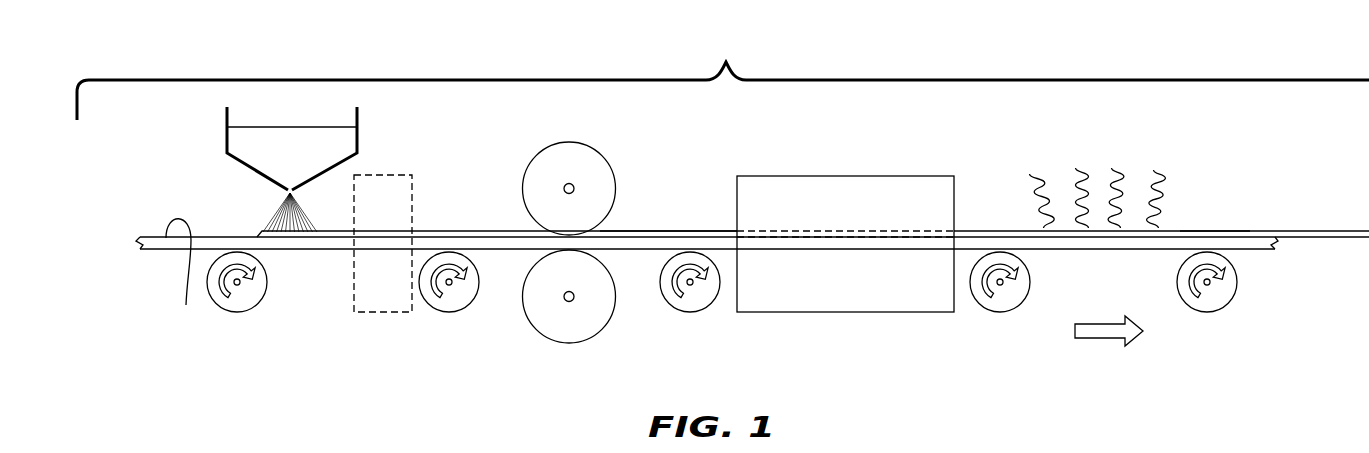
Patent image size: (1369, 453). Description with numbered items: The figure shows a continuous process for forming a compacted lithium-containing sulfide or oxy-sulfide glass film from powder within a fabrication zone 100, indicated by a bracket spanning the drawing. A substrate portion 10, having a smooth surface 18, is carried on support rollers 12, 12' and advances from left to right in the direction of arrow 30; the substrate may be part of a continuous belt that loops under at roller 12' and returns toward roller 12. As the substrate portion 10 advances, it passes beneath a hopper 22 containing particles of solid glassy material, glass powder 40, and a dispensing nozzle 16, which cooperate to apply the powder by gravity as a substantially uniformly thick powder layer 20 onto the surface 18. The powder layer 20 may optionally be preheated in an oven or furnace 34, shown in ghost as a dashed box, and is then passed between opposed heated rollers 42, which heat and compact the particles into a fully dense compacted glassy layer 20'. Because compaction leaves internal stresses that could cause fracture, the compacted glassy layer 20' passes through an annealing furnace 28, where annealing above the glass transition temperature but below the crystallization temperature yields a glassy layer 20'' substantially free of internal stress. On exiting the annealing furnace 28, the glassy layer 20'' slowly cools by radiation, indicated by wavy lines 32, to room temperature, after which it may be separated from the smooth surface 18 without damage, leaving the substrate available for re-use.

The fabrication zone 100 is at (727, 62).
The substrate portion 10 is at (153, 237).
The rollers 12 is at (618, 322).
The roller 12' is at (1240, 308).
The dispensing nozzle 16 is at (288, 192).
The smooth surface 18 is at (181, 280).
The powder layer 20 is at (813, 189).
The compacted glassy layer 20' is at (668, 196).
The glassy layer 20'' is at (1221, 194).
The hopper 22 is at (357, 132).
The annealing furnace 28 is at (929, 176).
The arrow 30 is at (1117, 321).
The radiation 32 is at (1125, 178).
The oven or furnace 34 is at (385, 312).
The glass powder 40 is at (289, 127).
The heated rollers 42 is at (606, 160).